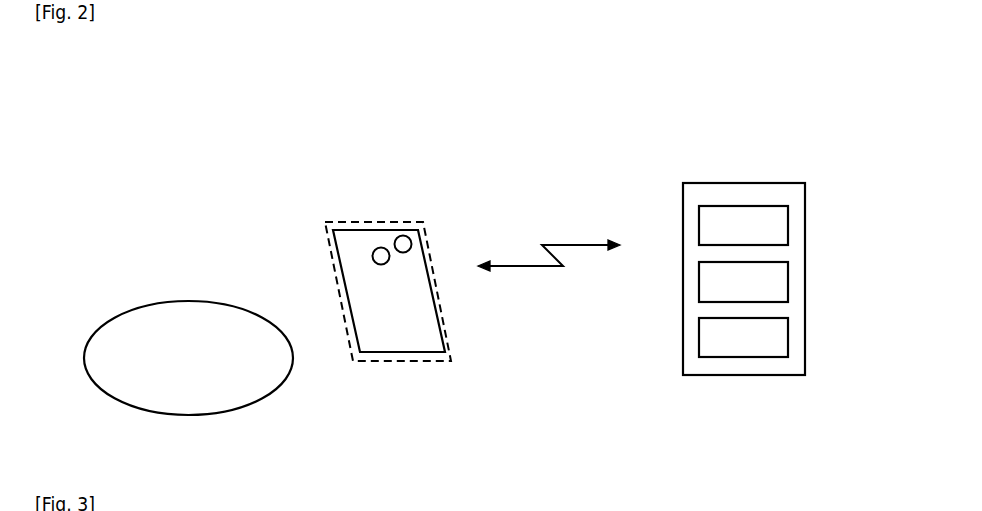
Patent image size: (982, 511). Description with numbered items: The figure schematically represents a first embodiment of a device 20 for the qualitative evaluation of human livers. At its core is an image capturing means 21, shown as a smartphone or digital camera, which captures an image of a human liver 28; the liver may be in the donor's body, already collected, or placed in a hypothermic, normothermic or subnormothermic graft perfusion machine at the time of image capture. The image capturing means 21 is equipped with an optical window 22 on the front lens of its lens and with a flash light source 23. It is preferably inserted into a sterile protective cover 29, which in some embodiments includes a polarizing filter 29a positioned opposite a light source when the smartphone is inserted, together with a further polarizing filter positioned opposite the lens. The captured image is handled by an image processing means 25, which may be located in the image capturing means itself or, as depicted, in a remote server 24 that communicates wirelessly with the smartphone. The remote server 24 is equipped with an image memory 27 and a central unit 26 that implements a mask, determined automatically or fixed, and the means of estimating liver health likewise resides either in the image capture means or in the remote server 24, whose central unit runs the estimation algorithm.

The device for the qualitative evaluation of human livers 20 is at (357, 132).
The image capturing means 21 is at (420, 340).
The optical window 22 is at (380, 248).
The flash light source 23 is at (418, 232).
The remote server 24 is at (705, 197).
The image processing means 25 is at (778, 227).
The central unit 26 is at (778, 288).
The image memory 27 is at (778, 343).
The human liver 28 is at (115, 375).
The sterile protective cover 29 is at (380, 355).
The polarizing filter 29a is at (383, 297).